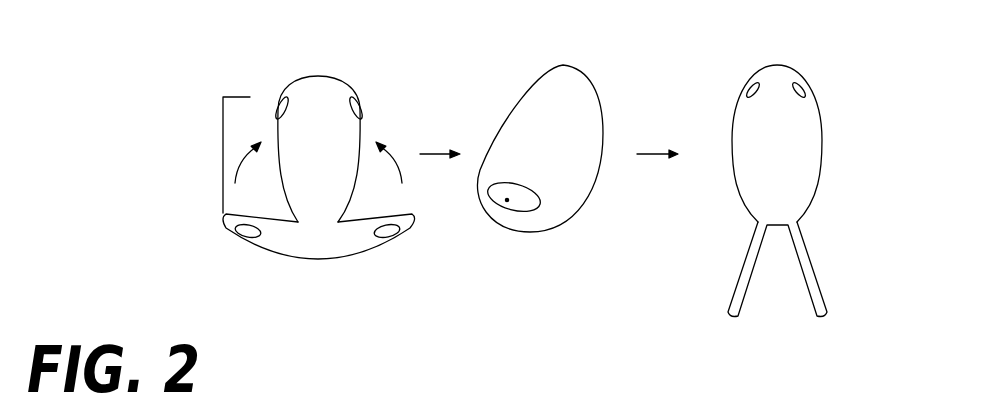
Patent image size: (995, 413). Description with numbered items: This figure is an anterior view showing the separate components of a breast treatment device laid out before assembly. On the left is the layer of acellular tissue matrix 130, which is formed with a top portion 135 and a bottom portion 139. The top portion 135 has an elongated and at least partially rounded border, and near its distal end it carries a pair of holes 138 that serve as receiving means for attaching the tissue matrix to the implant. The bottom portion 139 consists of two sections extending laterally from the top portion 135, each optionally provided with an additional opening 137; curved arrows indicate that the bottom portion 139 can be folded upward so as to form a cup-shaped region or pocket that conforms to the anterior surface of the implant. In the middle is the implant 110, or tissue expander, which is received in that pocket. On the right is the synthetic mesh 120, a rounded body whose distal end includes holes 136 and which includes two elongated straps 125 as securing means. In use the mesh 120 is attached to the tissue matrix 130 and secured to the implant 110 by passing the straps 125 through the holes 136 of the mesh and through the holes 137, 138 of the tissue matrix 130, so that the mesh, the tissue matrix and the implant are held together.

The implant 110 is at (548, 72).
The synthetic mesh 120 is at (807, 153).
The straps 125 is at (800, 263).
The layer of acellular tissue matrix 130 is at (327, 75).
The top portion 135 is at (243, 97).
The holes 136 is at (804, 80).
The openings 137 is at (245, 235).
The holes 138 is at (285, 97).
The bottom portion 139 is at (355, 245).